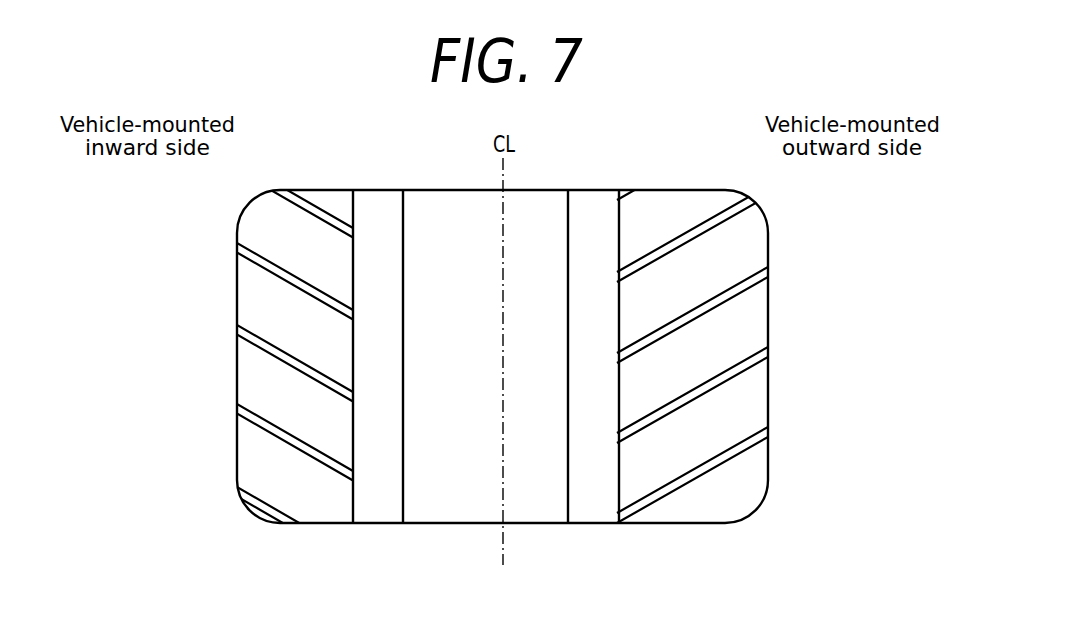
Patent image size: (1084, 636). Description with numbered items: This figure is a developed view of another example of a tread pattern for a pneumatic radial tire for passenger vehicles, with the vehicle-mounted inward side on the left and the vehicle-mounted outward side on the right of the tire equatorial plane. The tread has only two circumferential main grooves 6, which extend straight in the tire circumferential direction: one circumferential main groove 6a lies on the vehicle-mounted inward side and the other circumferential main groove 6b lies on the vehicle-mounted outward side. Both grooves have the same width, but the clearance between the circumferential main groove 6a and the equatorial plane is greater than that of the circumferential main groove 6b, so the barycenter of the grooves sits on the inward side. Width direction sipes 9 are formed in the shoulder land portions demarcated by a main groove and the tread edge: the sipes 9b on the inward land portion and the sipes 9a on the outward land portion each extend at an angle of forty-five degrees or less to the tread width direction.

The circumferential main groove 6 is at (489, 387).
The circumferential main groove 6a is at (382, 492).
The circumferential main groove 6b is at (597, 492).
The width direction sipe 9 is at (506, 332).
The width direction sipe 9a is at (742, 363).
The width direction sipe 9b is at (270, 347).